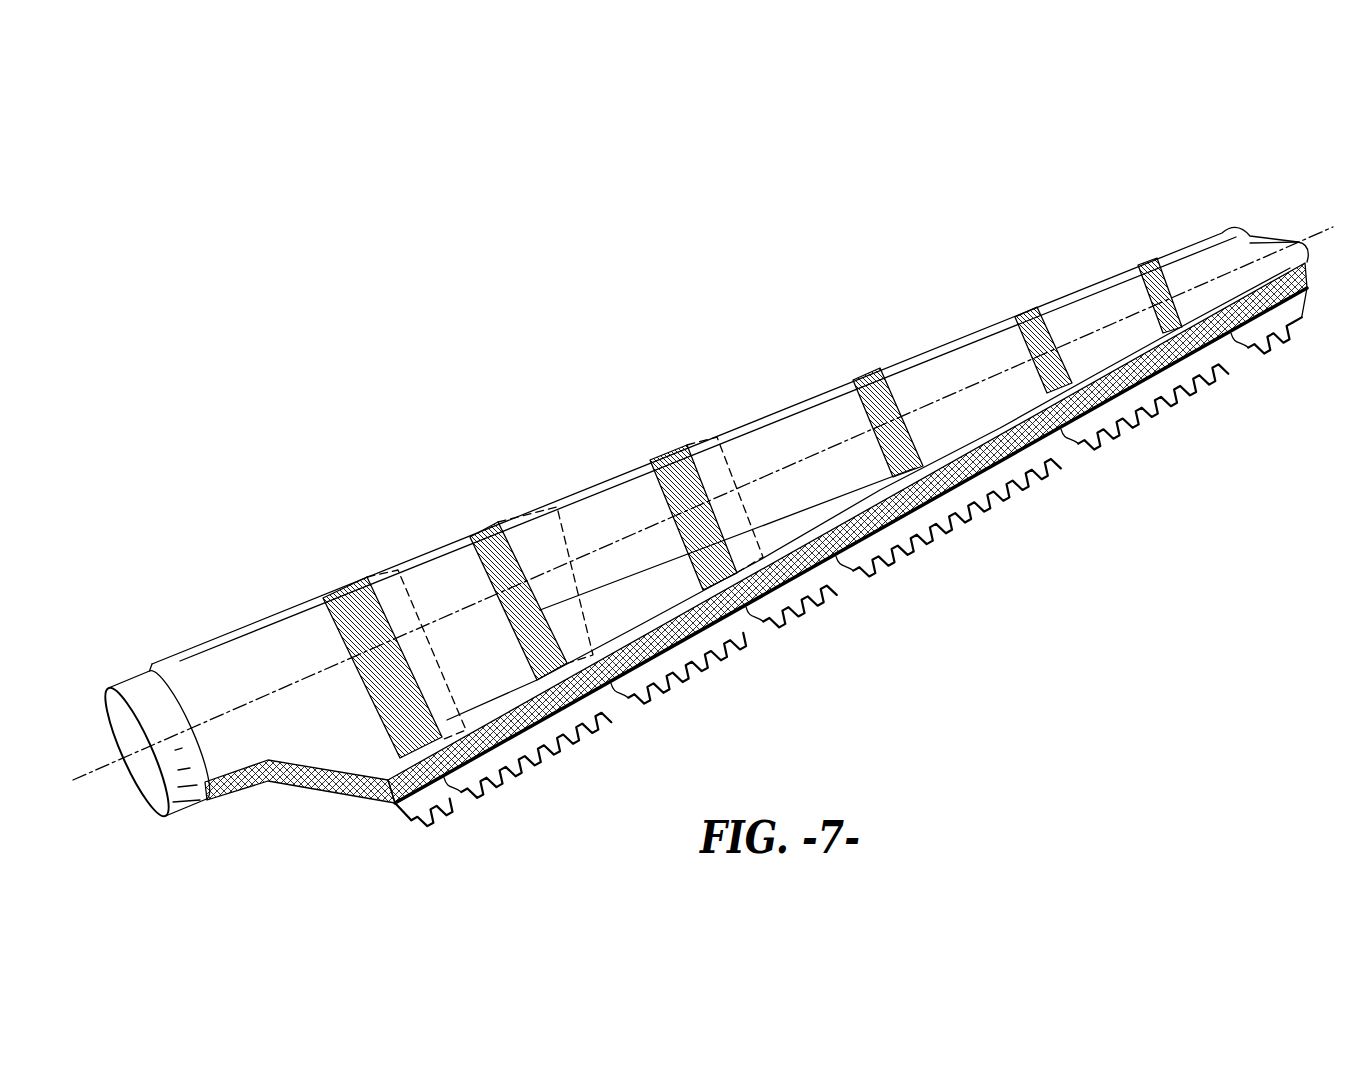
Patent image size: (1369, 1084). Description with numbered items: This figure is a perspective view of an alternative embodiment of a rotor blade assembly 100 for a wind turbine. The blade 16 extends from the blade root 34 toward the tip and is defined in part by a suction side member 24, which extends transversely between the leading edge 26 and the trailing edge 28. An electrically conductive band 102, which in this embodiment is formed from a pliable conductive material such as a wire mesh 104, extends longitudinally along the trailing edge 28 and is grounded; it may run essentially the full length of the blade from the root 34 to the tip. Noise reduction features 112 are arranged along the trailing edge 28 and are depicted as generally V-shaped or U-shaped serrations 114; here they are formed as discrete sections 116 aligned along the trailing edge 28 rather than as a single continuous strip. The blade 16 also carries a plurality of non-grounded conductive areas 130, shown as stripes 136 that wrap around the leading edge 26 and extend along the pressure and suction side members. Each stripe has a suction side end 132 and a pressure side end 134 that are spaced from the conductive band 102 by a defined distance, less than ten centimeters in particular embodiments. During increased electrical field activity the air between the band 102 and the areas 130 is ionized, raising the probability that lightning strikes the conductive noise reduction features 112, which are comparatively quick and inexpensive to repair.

The rotor blade assembly 100 is at (699, 490).
The blade 16 is at (699, 524).
The blade root 34 is at (132, 642).
The suction side member 24 is at (530, 552).
The leading edge 26 is at (355, 630).
The non-grounded conductive areas 130 is at (676, 460).
The stripes 136 is at (885, 382).
The electrically conductive band 102 is at (756, 576).
The wire mesh 104 is at (738, 620).
The noise reduction features 112 is at (869, 590).
The serrations 114 is at (1150, 400).
The discrete sections 116 is at (1228, 352).
The trailing edge 28 is at (488, 757).
The suction side end 132 is at (448, 813).
The pressure side end 134 is at (613, 712).